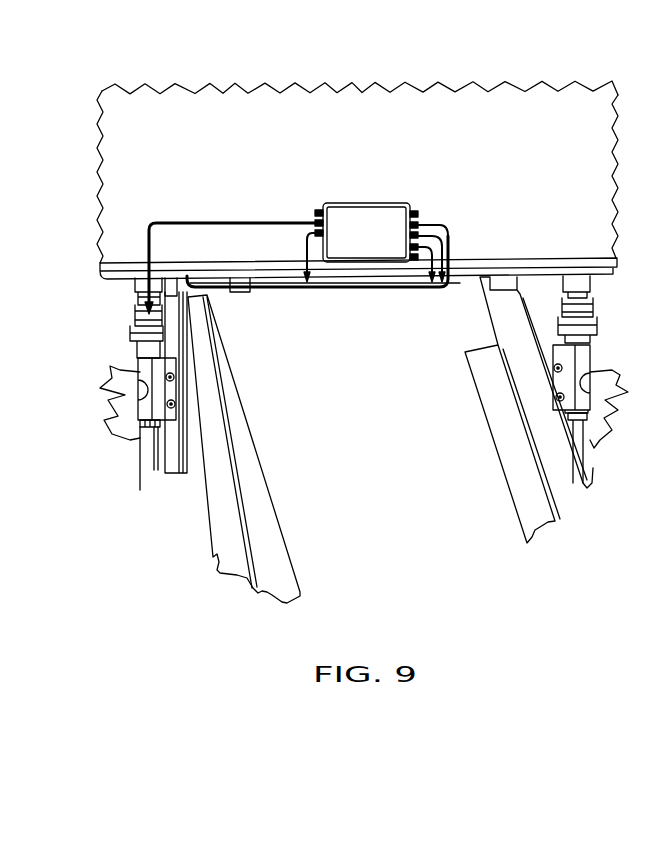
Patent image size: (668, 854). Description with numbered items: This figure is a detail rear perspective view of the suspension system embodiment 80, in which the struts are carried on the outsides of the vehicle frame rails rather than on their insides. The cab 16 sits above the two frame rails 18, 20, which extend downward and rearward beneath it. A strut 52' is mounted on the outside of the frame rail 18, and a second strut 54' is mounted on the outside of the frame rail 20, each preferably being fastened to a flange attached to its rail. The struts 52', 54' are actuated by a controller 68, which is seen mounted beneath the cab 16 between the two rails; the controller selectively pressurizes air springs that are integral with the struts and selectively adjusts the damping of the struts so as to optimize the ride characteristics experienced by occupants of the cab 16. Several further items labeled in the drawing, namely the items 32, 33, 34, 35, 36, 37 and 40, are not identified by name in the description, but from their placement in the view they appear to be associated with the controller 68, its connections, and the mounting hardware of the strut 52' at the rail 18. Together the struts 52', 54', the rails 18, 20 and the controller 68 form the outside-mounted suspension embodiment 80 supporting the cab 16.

The cab 16 is at (375, 128).
The wiring harness 34 is at (263, 208).
The controller housing 32 is at (348, 203).
The controller 68 is at (386, 248).
The wiring harness 33 is at (437, 224).
The mounting fitting 40 is at (133, 285).
The flange 37 is at (130, 335).
The strut 52' is at (116, 399).
The fastener 36 is at (140, 443).
The rod 35 is at (175, 447).
The frame rail 18 is at (260, 490).
The frame rail 20 is at (505, 453).
The strut 54' is at (606, 395).
The embodiment of suspension system 80 is at (228, 586).